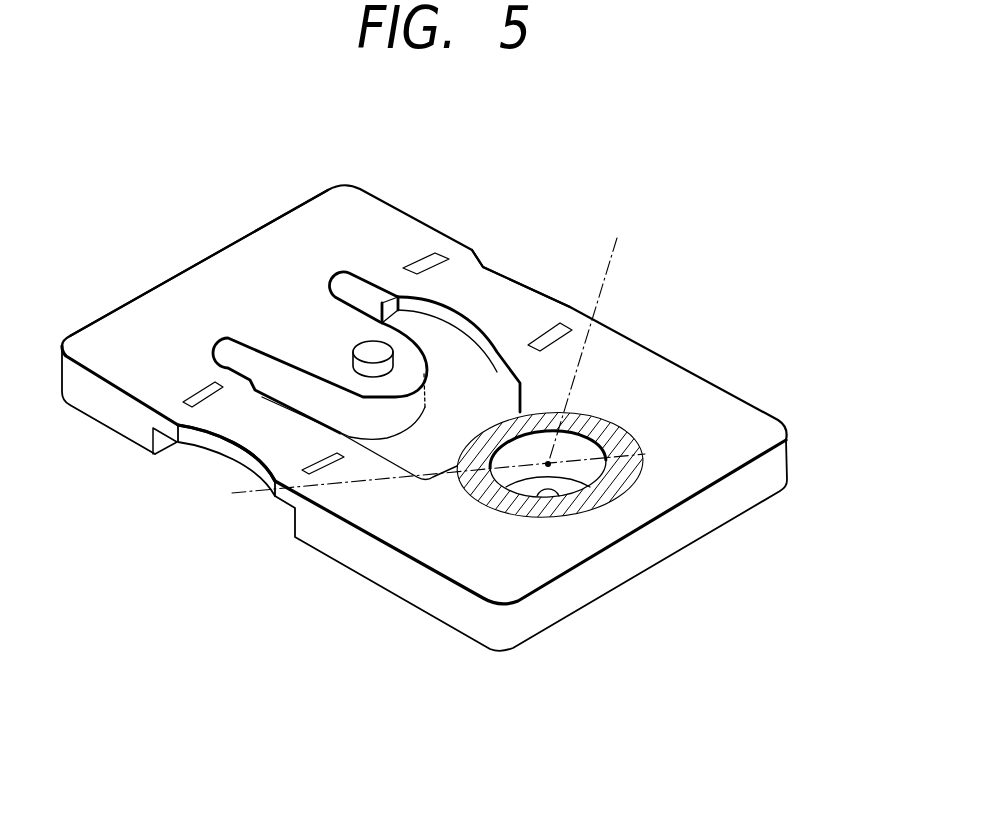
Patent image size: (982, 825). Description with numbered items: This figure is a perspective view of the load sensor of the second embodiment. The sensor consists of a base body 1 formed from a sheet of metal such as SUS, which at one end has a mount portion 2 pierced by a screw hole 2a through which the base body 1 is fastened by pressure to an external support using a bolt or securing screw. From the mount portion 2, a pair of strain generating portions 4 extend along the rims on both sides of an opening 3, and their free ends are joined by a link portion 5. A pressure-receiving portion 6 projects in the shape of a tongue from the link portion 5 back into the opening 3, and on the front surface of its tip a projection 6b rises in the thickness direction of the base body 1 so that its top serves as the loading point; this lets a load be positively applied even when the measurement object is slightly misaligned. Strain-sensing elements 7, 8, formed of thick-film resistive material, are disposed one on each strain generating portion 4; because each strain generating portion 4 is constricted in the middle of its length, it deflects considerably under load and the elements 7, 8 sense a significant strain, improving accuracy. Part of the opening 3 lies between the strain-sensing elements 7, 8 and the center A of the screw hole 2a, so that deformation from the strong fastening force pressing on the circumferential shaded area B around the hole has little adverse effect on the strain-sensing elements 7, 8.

The base body 1 is at (768, 438).
The mount portion 2 is at (613, 528).
The screw hole 2a is at (561, 500).
The opening 3 is at (467, 353).
The strain generating portions 4 is at (253, 428).
The link portion 5 is at (312, 212).
The pressure-receiving portion 6 is at (327, 346).
The projection 6b is at (382, 355).
The strain-sensing element 7 is at (568, 324).
The strain-sensing element 8 is at (431, 252).
The center of the screw hole A is at (620, 431).
The shaded area B is at (627, 477).